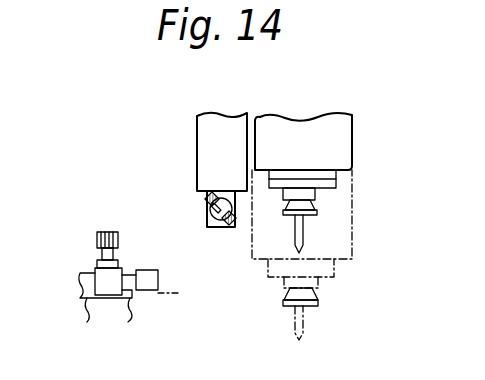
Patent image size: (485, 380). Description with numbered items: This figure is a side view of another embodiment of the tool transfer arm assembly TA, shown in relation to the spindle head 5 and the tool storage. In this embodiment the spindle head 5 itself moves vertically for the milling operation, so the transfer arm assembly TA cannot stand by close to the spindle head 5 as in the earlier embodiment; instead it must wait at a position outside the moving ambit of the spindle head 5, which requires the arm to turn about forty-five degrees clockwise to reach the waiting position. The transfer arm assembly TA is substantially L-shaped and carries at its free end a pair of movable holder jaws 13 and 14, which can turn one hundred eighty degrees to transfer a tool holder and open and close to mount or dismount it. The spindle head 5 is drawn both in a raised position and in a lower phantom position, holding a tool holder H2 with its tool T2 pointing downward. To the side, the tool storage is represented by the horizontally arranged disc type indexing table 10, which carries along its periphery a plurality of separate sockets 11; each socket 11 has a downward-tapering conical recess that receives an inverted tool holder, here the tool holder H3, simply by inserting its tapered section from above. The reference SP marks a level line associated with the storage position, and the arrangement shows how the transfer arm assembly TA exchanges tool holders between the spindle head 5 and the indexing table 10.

The spindle head 5 is at (347, 142).
The movable holder jaw 14 is at (210, 192).
The movable holder jaw 13 is at (215, 227).
The transfer arm assembly TA is at (196, 212).
The tool T2 is at (303, 233).
The tool holder H2 is at (320, 218).
The tool holder H3 is at (93, 258).
The indexing table 10 is at (98, 307).
The socket 11 is at (139, 308).
The spindle plane SP is at (186, 292).